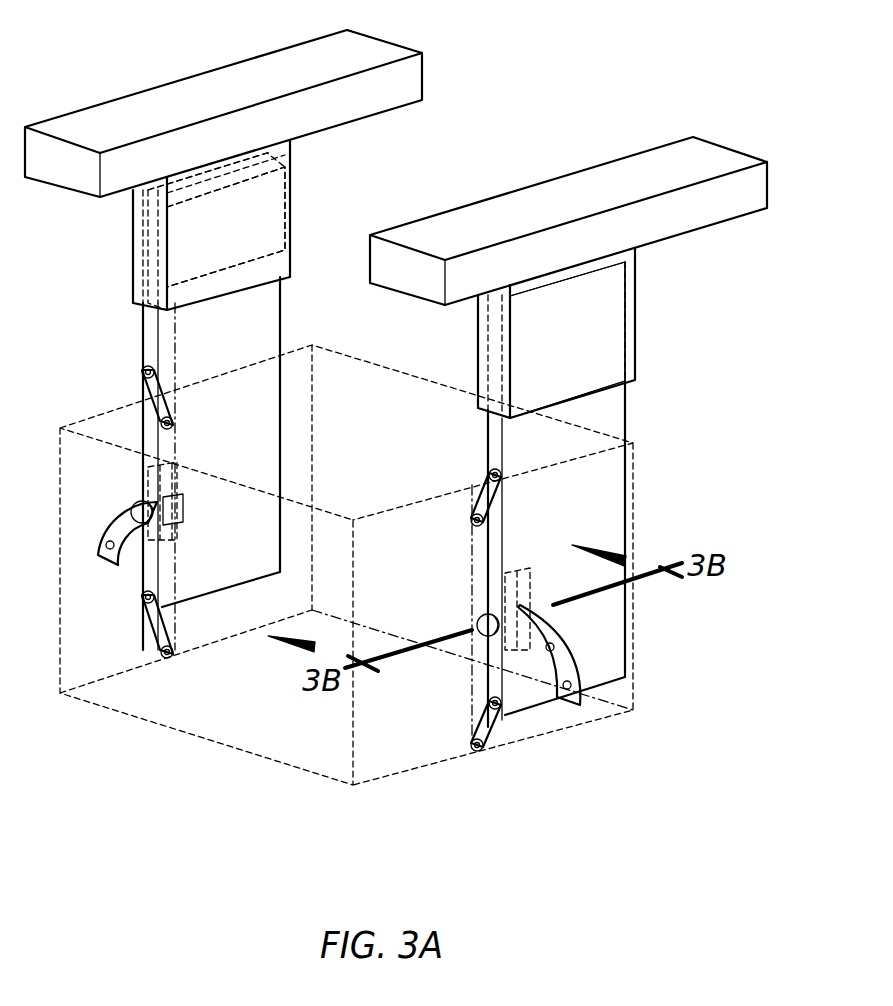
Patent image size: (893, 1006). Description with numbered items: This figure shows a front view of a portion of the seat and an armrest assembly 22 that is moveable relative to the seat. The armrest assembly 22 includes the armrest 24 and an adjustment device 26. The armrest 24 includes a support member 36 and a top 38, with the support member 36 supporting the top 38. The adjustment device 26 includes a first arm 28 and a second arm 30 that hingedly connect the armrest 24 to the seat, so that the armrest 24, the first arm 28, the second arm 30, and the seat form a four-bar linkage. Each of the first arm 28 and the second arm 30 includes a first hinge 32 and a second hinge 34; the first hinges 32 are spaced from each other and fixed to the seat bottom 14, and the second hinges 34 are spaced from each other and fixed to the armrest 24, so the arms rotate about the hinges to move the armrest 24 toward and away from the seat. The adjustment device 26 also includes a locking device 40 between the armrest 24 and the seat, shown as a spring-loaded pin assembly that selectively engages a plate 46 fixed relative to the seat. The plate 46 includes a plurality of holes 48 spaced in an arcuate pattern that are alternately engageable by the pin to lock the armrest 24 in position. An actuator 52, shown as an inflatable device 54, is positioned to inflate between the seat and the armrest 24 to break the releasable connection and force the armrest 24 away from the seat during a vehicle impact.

The seat bottom 14 is at (218, 748).
The armrest assembly 22 is at (108, 383).
The armrest 24 is at (110, 243).
The adjustment device 26 is at (322, 566).
The first arm 28 is at (155, 625).
The second arm 30 is at (160, 400).
The first hinge 32 is at (172, 428).
The second hinge 34 is at (146, 368).
The support member 36 is at (613, 423).
The top 38 is at (148, 103).
The locking device 40 is at (138, 508).
The plate 46 is at (320, 627).
The holes 48 is at (106, 543).
The actuator 52 is at (272, 202).
The inflatable device 54 is at (396, 292).